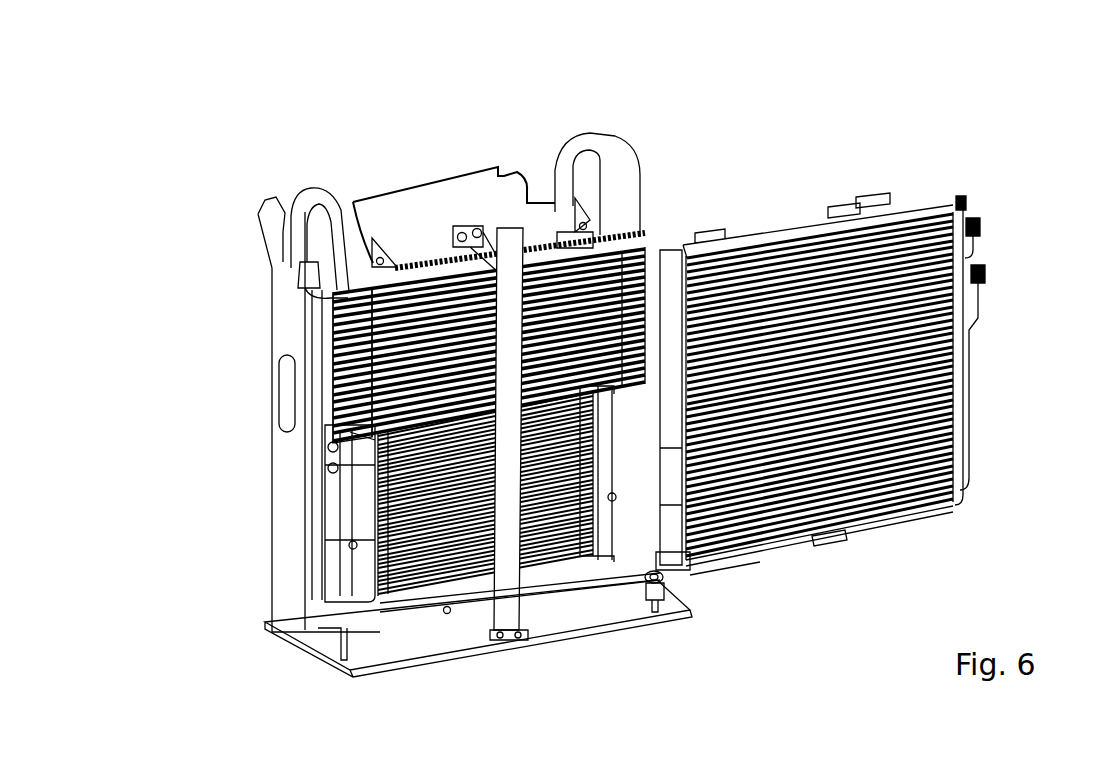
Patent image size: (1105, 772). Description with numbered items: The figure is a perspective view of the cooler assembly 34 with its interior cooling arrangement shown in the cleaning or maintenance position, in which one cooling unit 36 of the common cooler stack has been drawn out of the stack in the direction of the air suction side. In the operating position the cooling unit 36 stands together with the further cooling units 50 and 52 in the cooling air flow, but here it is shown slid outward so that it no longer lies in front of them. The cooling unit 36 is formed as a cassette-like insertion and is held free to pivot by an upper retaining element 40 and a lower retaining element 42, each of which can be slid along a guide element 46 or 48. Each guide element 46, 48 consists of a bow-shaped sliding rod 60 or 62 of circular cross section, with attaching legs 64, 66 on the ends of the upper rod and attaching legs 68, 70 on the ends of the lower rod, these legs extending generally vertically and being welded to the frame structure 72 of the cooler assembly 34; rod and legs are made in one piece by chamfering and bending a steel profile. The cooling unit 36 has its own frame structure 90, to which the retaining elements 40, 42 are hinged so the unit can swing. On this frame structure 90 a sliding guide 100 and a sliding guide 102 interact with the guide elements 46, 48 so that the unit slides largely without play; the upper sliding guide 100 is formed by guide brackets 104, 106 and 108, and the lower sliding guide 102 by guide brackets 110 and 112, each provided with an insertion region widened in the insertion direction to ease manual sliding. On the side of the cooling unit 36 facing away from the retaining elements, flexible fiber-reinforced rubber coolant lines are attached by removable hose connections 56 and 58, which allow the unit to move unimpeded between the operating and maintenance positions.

The cooler assembly 34 is at (968, 100).
The cooling unit 36 is at (875, 400).
The upper retaining element 40 is at (674, 228).
The lower retaining element 42 is at (645, 602).
The guide element 46 is at (303, 277).
The guide element 48 is at (330, 638).
The cooling unit 50 is at (432, 548).
The cooling unit 52 is at (330, 378).
The hose connection 56 is at (982, 229).
The hose connection 58 is at (987, 283).
The sliding rod 60 is at (412, 300).
The sliding rod 62 is at (447, 614).
The attaching leg 64 is at (645, 180).
The attaching leg 66 is at (338, 305).
The attaching leg 68 is at (655, 600).
The attaching leg 70 is at (348, 654).
The frame structure 72 is at (278, 448).
The frame structure 90 is at (967, 198).
The sliding guide 100 is at (838, 155).
The sliding guide 102 is at (845, 586).
The guide bracket 104 is at (750, 236).
The guide bracket 106 is at (860, 205).
The guide bracket 108 is at (880, 200).
The guide bracket 110 is at (692, 562).
The guide bracket 112 is at (850, 535).